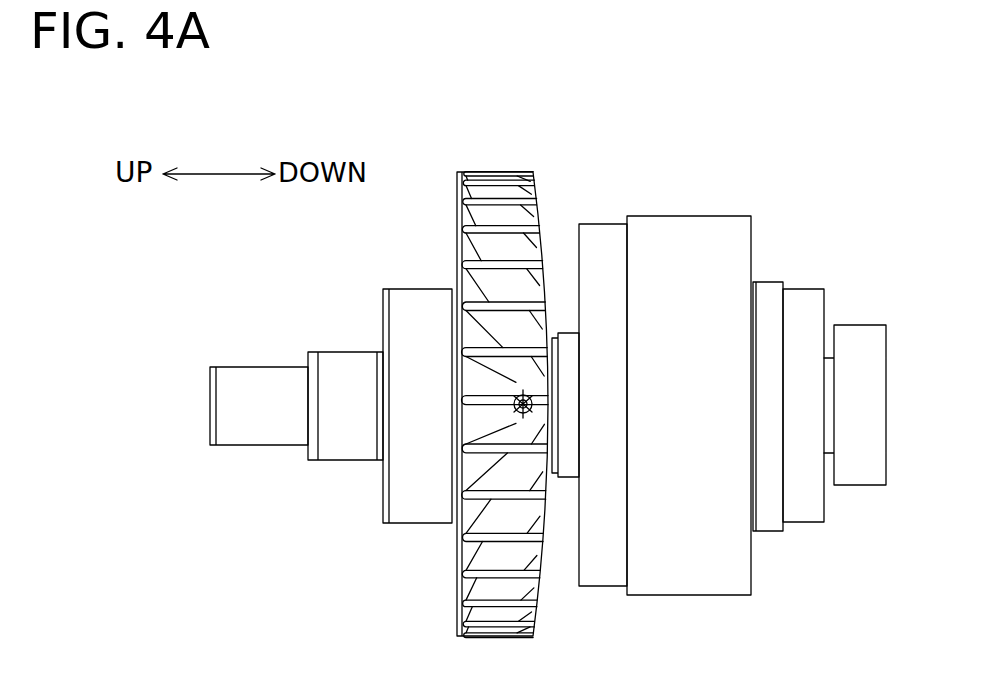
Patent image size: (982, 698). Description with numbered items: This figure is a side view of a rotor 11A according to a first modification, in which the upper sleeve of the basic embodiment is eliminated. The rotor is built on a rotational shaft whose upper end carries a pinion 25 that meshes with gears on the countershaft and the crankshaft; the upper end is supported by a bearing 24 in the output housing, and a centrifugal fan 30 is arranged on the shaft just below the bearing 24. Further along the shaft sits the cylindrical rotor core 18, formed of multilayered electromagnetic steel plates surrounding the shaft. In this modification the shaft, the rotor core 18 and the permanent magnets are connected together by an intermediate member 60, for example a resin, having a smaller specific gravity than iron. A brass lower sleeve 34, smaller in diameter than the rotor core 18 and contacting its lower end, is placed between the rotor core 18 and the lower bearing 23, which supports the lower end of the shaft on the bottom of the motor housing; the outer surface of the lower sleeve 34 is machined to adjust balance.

The rotor 11A is at (421, 172).
The pinion 25 is at (252, 373).
The bearing 24 is at (408, 295).
The centrifugal fan 30 is at (503, 178).
The intermediate member 60 is at (592, 230).
The rotor core 18 is at (697, 203).
The lower sleeve 34 is at (770, 290).
The bearing 23 is at (858, 338).